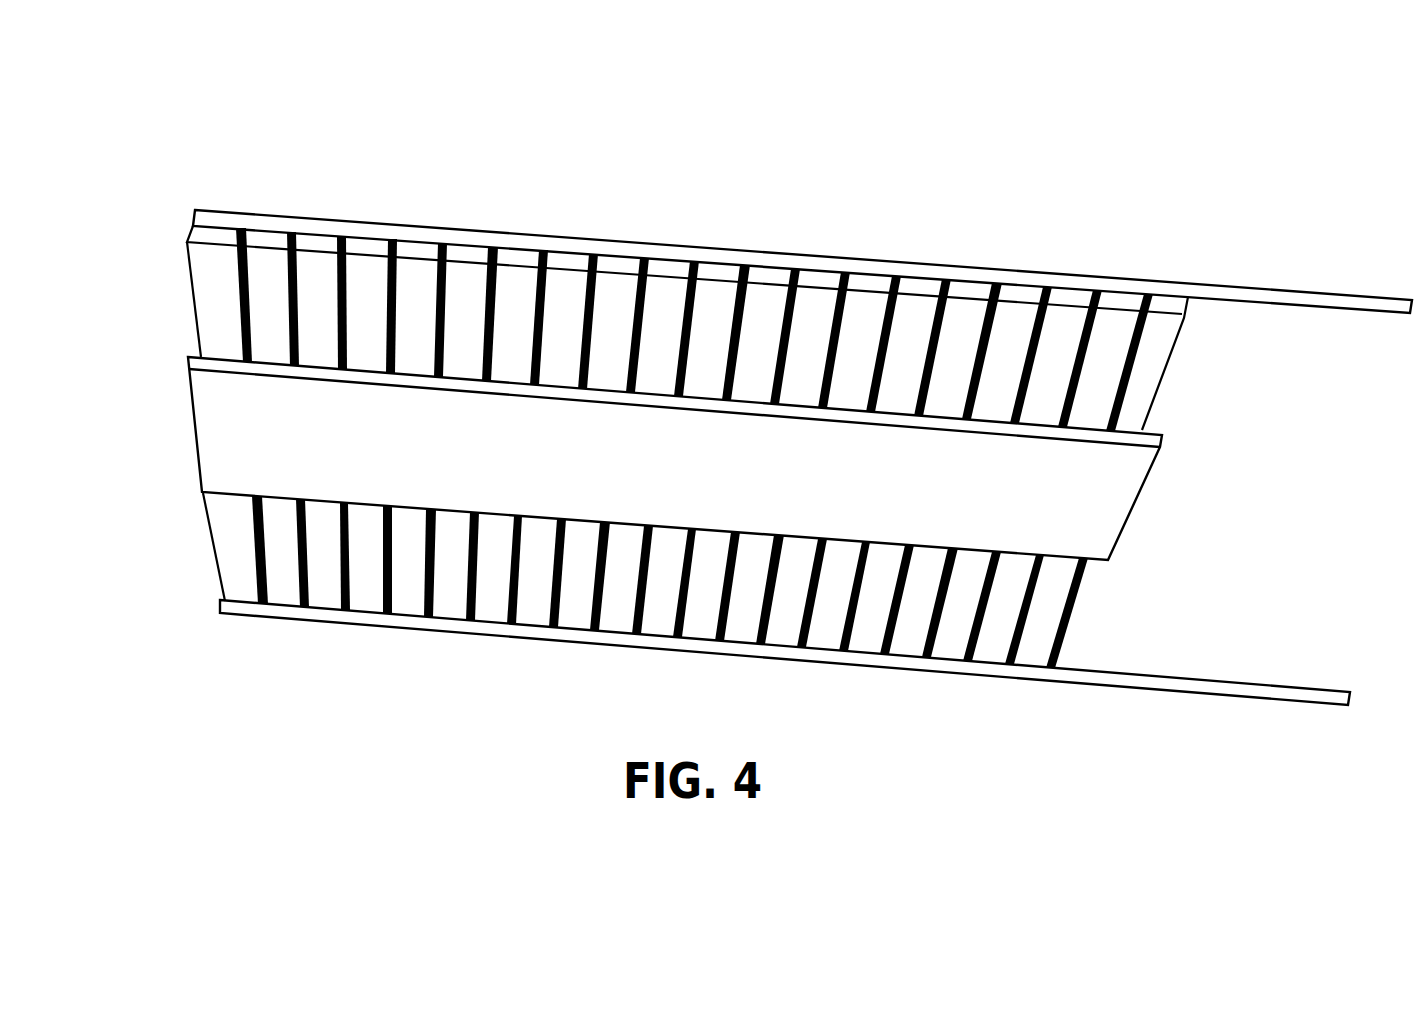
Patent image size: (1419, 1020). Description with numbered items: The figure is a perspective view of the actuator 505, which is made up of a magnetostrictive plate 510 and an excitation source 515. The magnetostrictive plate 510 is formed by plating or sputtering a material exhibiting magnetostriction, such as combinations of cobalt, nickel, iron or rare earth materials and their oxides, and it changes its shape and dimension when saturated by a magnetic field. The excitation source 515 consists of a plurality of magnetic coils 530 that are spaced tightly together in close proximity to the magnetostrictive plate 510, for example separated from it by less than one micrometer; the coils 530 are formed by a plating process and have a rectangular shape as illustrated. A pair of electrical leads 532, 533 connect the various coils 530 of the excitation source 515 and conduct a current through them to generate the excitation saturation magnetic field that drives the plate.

The actuator 505 is at (679, 110).
The magnetostrictive plate 510 is at (188, 375).
The excitation source 515 is at (283, 203).
The magnetic coils 530 is at (517, 278).
The electrical lead 532 is at (1248, 285).
The electrical lead 533 is at (1192, 677).